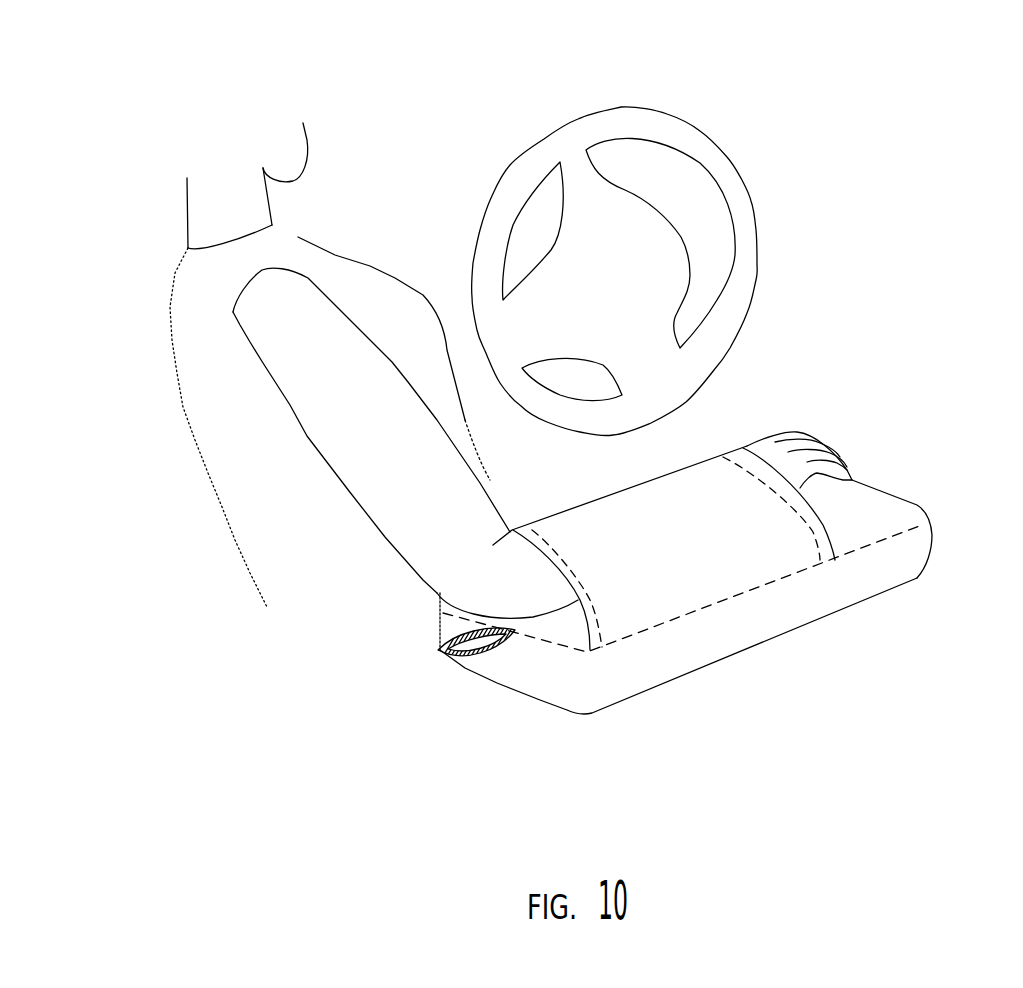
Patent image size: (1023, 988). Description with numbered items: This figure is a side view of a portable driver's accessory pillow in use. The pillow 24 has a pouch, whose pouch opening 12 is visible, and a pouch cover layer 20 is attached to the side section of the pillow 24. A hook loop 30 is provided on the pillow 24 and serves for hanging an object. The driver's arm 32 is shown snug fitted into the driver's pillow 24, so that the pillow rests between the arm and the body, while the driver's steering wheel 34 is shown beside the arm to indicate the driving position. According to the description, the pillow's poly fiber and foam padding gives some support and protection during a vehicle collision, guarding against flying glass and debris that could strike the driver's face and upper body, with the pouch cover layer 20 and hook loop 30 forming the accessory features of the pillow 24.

The pouch opening 12 is at (547, 737).
The pouch cover layer 20 is at (747, 573).
The pillow 24 is at (907, 568).
The hook loop 30 is at (440, 650).
The driver's arm 32 is at (290, 368).
The driver's steering wheel 34 is at (623, 98).